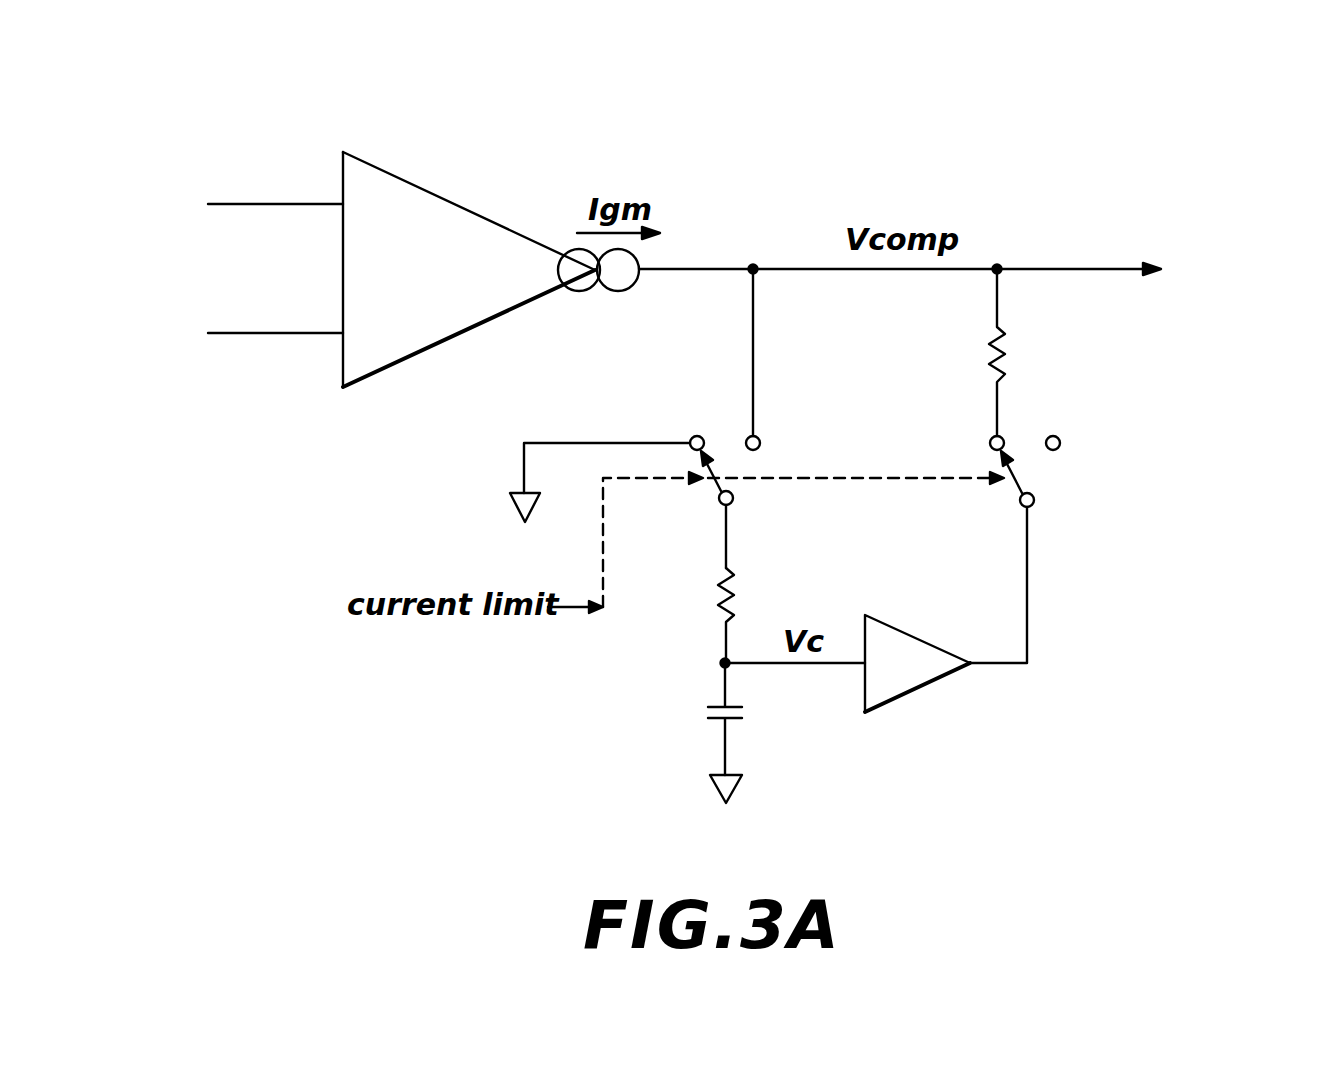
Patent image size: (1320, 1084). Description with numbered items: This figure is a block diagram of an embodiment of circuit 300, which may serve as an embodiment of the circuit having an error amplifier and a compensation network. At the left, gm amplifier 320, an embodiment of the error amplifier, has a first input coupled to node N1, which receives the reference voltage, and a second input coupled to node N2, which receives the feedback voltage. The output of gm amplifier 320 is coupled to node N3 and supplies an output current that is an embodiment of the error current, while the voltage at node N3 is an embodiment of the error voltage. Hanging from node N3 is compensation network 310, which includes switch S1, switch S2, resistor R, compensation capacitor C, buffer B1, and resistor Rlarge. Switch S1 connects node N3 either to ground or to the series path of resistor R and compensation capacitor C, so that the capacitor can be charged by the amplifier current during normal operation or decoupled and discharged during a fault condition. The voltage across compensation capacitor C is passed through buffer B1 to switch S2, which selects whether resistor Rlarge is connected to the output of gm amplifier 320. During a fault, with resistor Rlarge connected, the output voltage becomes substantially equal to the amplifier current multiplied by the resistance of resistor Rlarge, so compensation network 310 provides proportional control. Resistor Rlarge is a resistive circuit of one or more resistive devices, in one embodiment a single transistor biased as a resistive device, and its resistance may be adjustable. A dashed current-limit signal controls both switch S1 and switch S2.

The circuit 300 is at (1050, 103).
The compensation network 310 is at (1140, 567).
The gm amplifier 320 is at (468, 210).
The node N1 is at (288, 204).
The node N2 is at (288, 333).
The node N3 is at (753, 265).
The switch S1 is at (583, 484).
The switch S2 is at (1028, 544).
The buffer B1 is at (917, 663).
The resistor R is at (709, 615).
The compensation capacitor C is at (709, 731).
The resistor Rlarge is at (1058, 351).